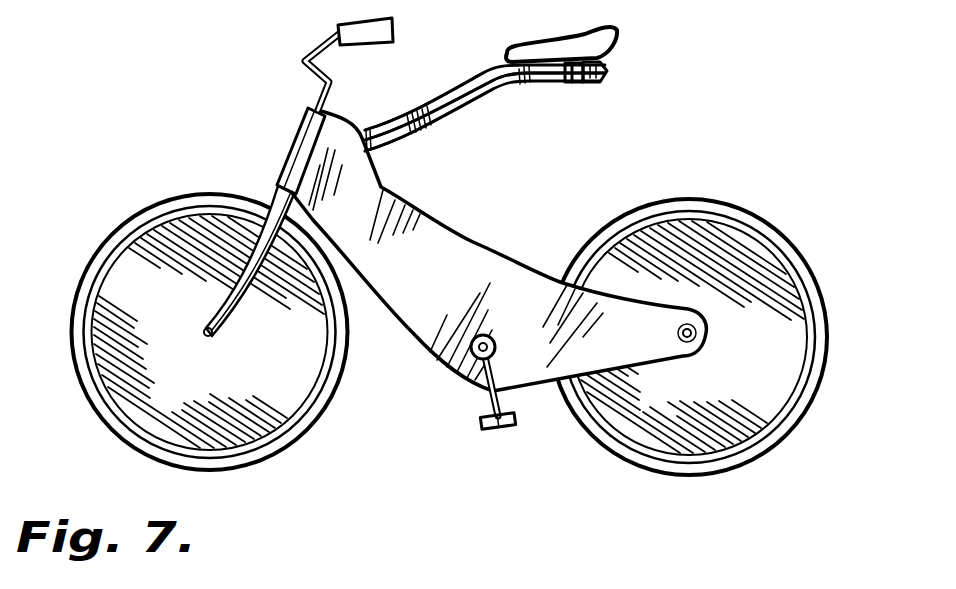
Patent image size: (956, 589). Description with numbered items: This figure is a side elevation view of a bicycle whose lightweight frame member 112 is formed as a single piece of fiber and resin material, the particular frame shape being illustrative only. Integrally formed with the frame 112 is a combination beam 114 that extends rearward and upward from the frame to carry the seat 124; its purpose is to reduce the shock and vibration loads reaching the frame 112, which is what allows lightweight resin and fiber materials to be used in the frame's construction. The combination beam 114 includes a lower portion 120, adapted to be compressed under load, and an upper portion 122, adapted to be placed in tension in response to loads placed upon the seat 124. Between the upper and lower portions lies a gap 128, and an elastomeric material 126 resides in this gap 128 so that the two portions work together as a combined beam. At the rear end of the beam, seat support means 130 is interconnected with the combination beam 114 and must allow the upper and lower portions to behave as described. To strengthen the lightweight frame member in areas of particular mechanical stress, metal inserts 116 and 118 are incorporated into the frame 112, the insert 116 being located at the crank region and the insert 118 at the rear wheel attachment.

The frame member 112 is at (474, 242).
The combination beam 114 is at (477, 78).
The metal insert 116 is at (457, 370).
The metal insert 118 is at (680, 316).
The lower portion 120 is at (470, 107).
The upper portion 122 is at (444, 101).
The seat 124 is at (620, 27).
The elastomeric material 126 is at (423, 133).
The gap 128 is at (611, 72).
The seat support means 130 is at (573, 82).